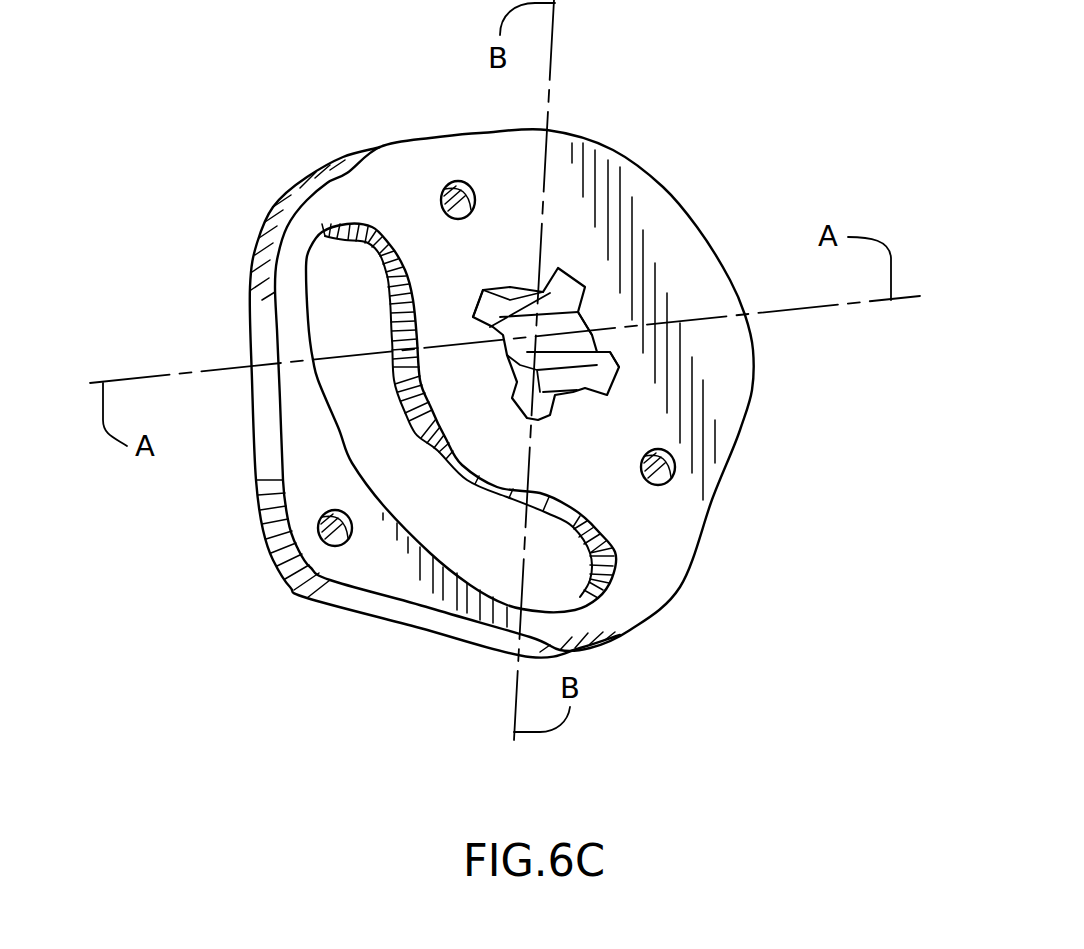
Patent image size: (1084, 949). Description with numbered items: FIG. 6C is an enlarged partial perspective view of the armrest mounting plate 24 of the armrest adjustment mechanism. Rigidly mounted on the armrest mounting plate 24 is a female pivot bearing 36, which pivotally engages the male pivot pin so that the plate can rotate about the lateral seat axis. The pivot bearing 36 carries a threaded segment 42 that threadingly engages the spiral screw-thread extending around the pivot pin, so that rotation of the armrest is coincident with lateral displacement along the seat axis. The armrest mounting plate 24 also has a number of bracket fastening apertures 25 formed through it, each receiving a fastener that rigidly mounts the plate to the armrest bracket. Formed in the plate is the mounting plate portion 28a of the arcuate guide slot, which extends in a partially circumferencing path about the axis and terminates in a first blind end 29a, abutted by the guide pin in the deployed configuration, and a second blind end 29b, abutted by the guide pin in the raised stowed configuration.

The armrest mounting plate 24 is at (688, 253).
The bracket fastening apertures 25 is at (463, 182).
The mounting plate portion 28a is at (374, 439).
The first blind end 29a is at (353, 222).
The second blind end 29b is at (618, 555).
The female pivot bearing 36 is at (503, 360).
The threaded segment 42 is at (476, 303).